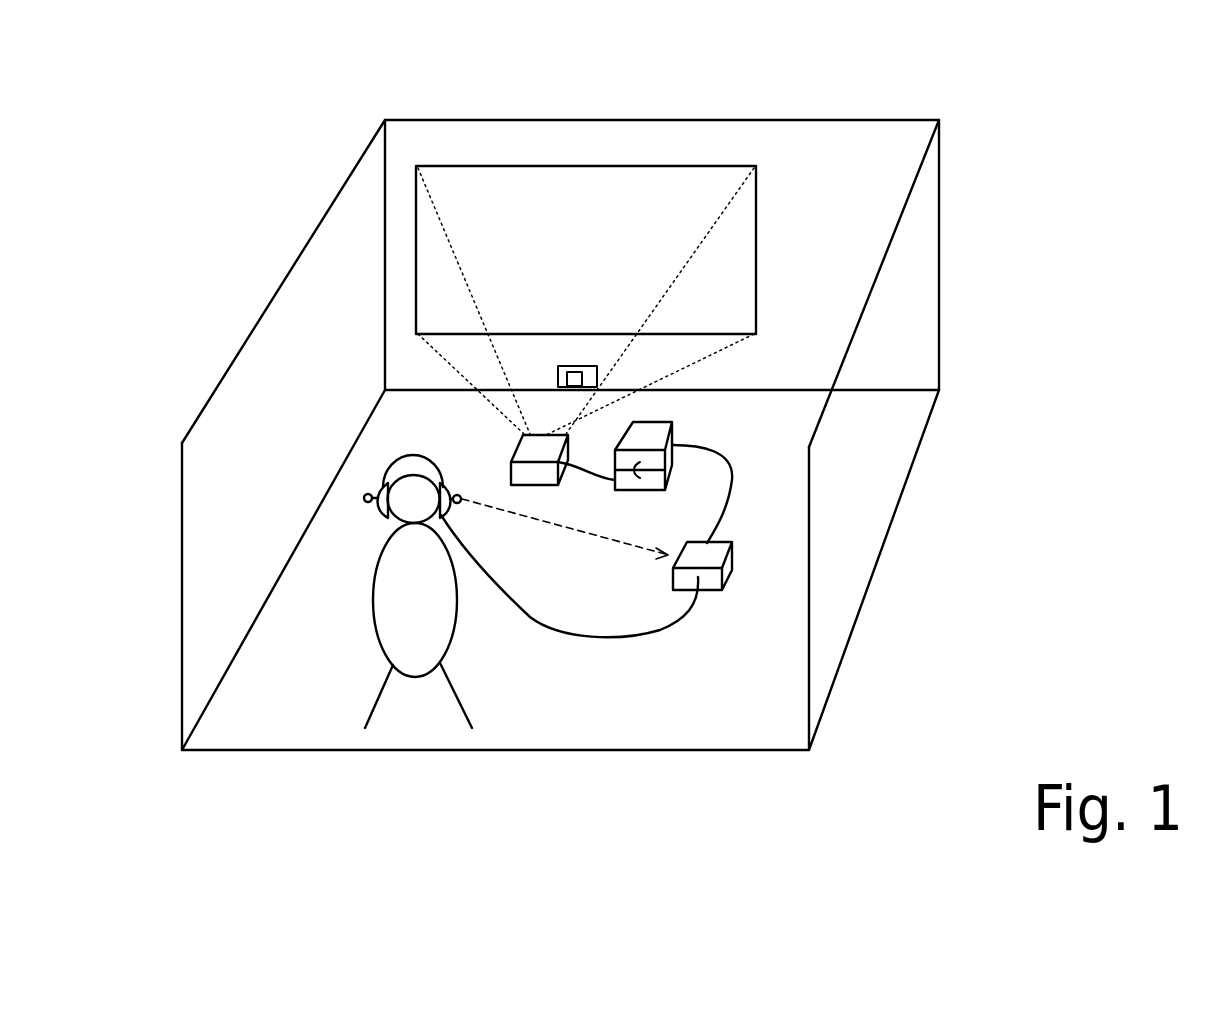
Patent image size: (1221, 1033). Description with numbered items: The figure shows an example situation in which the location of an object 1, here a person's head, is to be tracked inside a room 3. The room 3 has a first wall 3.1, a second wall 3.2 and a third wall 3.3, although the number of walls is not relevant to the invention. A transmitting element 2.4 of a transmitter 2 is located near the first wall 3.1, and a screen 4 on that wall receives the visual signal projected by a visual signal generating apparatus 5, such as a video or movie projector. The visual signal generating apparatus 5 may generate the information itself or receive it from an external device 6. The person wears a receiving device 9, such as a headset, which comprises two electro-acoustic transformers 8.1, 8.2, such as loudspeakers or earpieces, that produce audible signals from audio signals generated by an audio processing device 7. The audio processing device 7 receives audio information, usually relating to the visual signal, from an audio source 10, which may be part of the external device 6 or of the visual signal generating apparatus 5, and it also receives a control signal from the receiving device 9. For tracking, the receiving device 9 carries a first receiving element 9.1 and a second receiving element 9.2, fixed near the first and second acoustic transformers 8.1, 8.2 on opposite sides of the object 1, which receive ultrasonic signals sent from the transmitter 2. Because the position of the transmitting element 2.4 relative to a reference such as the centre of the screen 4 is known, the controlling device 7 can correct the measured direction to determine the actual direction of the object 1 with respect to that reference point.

The object 1 is at (393, 522).
The transmitter 2 is at (598, 366).
The transmitting element 2.4 is at (560, 383).
The room 3 is at (258, 782).
The first wall 3.1 is at (810, 120).
The second wall 3.2 is at (900, 247).
The third wall 3.3 is at (272, 305).
The screen 4 is at (470, 166).
The visual signal generating apparatus 5 is at (530, 487).
The external device 6 is at (630, 490).
The audio processing device 7 is at (730, 570).
The first electro-acoustic transformer 8.1 is at (443, 490).
The second electro-acoustic transformer 8.2 is at (382, 485).
The receiving device 9 is at (417, 455).
The first receiving element 9.1 is at (461, 502).
The second receiving element 9.2 is at (363, 498).
The audio source 10 is at (672, 435).